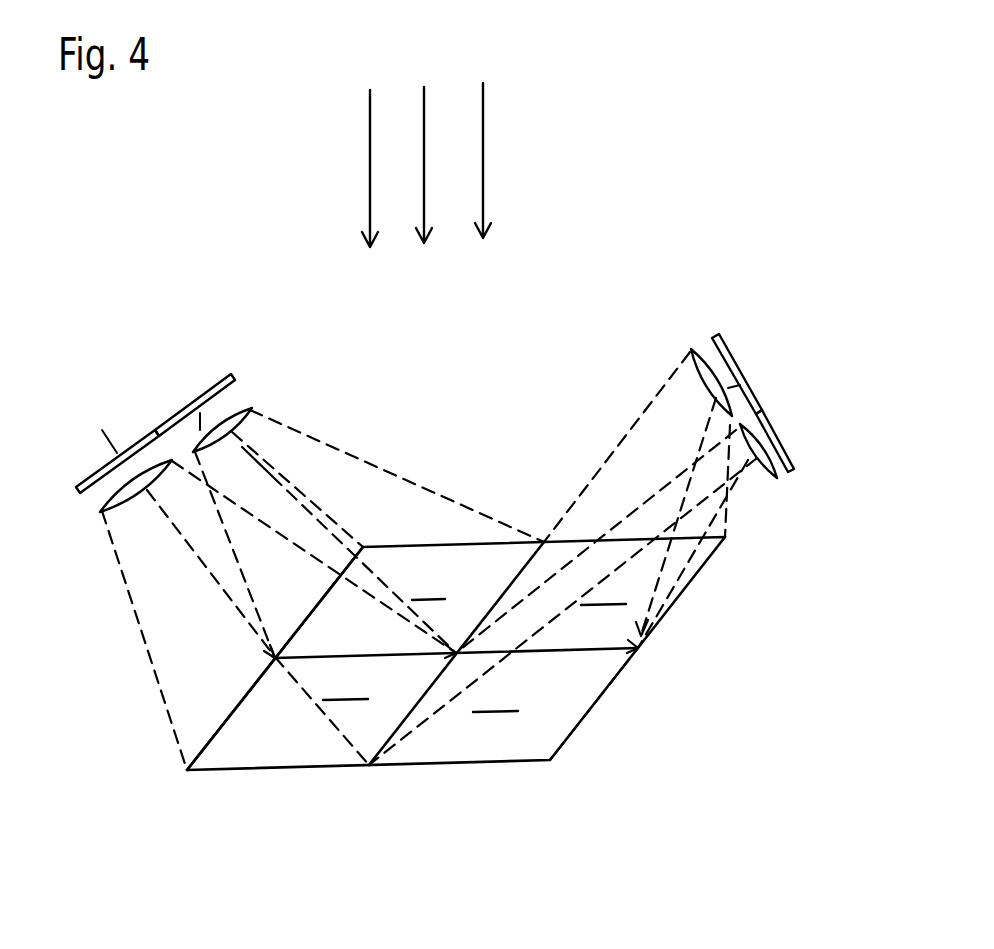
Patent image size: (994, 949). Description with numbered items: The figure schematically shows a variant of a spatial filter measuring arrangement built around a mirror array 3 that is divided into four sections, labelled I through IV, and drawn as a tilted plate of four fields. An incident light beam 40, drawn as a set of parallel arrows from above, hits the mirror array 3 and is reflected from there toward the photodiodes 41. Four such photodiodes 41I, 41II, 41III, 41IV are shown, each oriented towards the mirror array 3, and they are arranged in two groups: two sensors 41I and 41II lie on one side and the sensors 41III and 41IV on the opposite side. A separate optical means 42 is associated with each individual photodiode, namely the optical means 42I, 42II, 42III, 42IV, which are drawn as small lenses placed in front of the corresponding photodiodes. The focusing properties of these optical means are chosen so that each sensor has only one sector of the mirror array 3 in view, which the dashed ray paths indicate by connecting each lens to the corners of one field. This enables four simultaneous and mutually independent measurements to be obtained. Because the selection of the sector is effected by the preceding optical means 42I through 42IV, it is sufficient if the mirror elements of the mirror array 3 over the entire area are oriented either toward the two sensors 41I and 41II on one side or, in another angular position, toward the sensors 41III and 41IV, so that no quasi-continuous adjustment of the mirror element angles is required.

The mirror array 3 is at (467, 765).
The incident light beam 40 is at (483, 157).
The photodiodes 41 is at (428, 359).
The photodiode 41I is at (203, 398).
The photodiode 41II is at (118, 456).
The photodiode 41III is at (737, 366).
The photodiode 41IV is at (773, 422).
The optical means 42 is at (430, 538).
The optical means 42I is at (232, 431).
The optical means 42II is at (136, 497).
The optical means 42III is at (705, 383).
The optical means 42IV is at (771, 458).